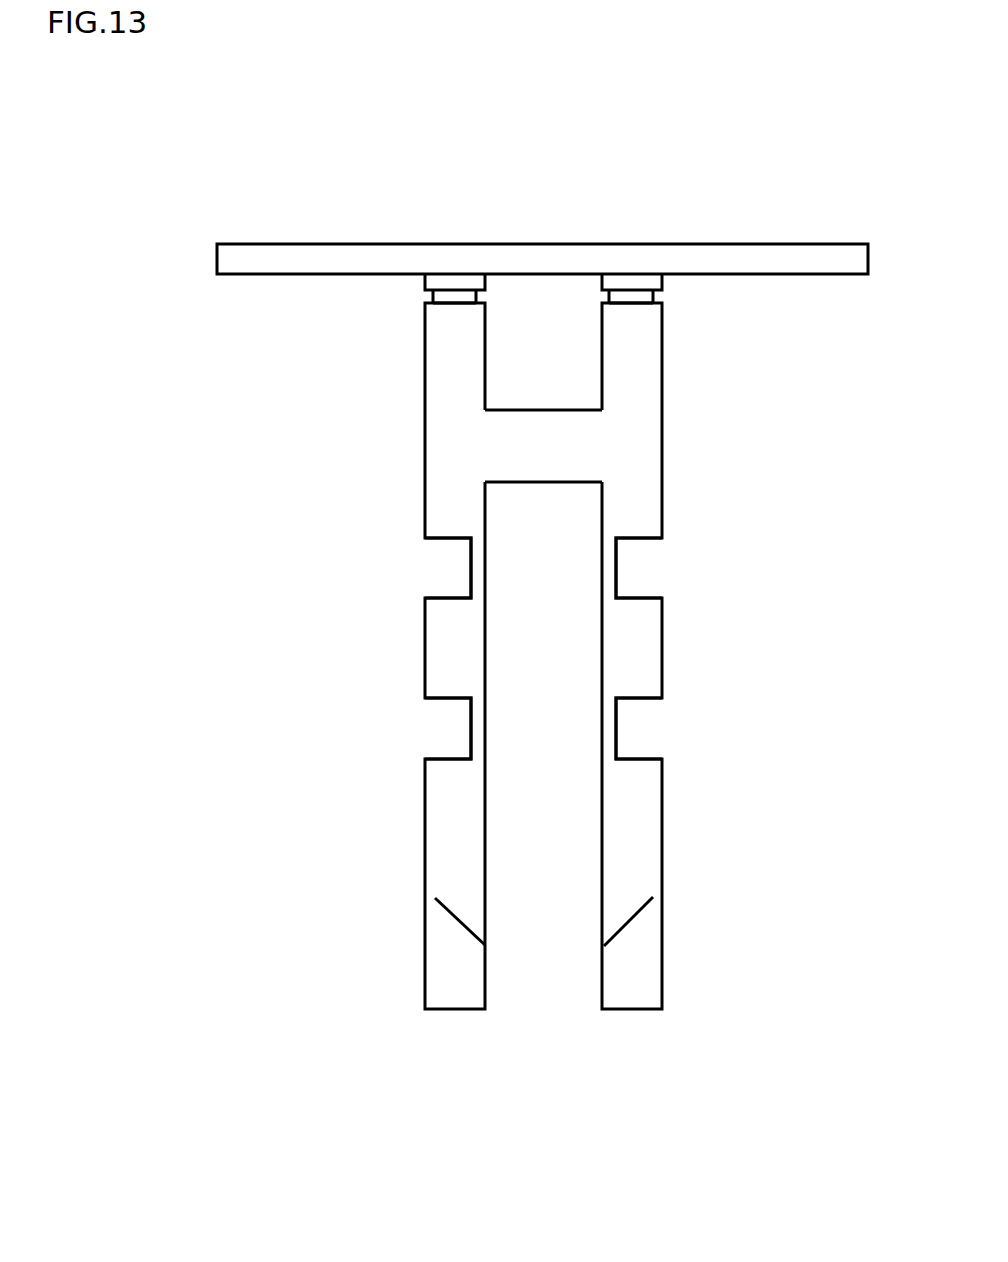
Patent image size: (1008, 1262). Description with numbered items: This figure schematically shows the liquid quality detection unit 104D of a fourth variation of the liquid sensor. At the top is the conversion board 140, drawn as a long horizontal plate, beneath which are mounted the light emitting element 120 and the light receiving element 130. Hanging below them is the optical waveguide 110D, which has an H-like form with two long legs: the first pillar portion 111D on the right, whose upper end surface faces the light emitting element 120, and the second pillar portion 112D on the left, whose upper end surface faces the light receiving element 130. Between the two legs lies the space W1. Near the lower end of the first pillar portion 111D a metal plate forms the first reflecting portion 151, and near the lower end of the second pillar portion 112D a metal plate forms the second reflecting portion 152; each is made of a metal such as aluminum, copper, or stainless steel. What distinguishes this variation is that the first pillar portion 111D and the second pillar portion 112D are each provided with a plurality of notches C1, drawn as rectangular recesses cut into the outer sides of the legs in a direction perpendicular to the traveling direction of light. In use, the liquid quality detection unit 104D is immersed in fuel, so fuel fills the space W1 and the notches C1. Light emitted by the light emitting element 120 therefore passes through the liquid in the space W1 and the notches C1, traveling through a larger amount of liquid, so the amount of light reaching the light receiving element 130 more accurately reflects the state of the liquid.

The conversion board 140 is at (813, 247).
The light receiving element 130 is at (450, 280).
The light emitting element 120 is at (630, 280).
The liquid quality detection unit 104D is at (552, 743).
The optical waveguide 110D is at (552, 684).
The second pillar portion 112D is at (425, 482).
The first pillar portion 111D is at (662, 472).
The notches C1 is at (441, 570).
The second reflecting portion 152 is at (455, 922).
The first reflecting portion 151 is at (627, 927).
The space W1 is at (544, 1008).